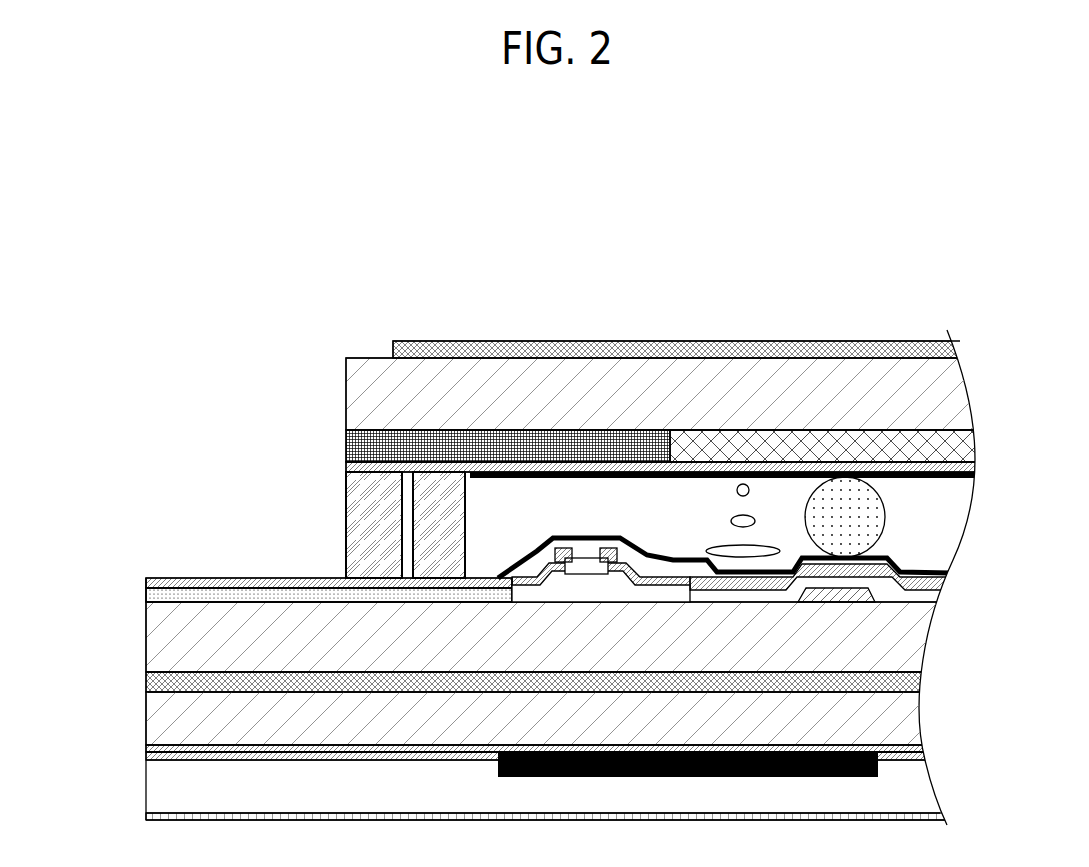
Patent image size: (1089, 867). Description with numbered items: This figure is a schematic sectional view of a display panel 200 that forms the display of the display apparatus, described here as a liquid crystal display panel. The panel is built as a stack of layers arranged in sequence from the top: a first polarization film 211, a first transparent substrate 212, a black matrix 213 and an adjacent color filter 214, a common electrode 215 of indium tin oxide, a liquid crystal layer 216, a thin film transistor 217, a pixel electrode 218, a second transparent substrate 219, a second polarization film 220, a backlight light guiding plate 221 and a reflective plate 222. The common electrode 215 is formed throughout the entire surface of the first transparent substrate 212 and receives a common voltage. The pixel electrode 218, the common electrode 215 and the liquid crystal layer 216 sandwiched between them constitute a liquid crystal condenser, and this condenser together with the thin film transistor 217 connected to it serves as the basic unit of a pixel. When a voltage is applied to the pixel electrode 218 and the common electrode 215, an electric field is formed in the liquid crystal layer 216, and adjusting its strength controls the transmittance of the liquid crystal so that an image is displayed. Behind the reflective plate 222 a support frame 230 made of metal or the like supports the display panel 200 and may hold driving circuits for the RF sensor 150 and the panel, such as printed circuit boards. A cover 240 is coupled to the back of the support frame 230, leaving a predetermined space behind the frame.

The display panel 200 is at (902, 280).
The first polarization film 211 is at (942, 351).
The first transparent substrate 212 is at (350, 392).
The black matrix 213 is at (355, 447).
The color filter 214 is at (955, 445).
The common electrode 215 is at (350, 473).
The liquid crystal layer 216 is at (755, 517).
The thin film transistor 217 is at (585, 560).
The pixel electrode 218 is at (867, 572).
The second transparent substrate 219 is at (146, 632).
The second polarization film 220 is at (146, 682).
The backlight light guiding plate 221 is at (146, 712).
The reflective plate 222 is at (146, 748).
The support frame 230 is at (146, 757).
The RF sensor 150 is at (840, 779).
The cover 240 is at (146, 817).